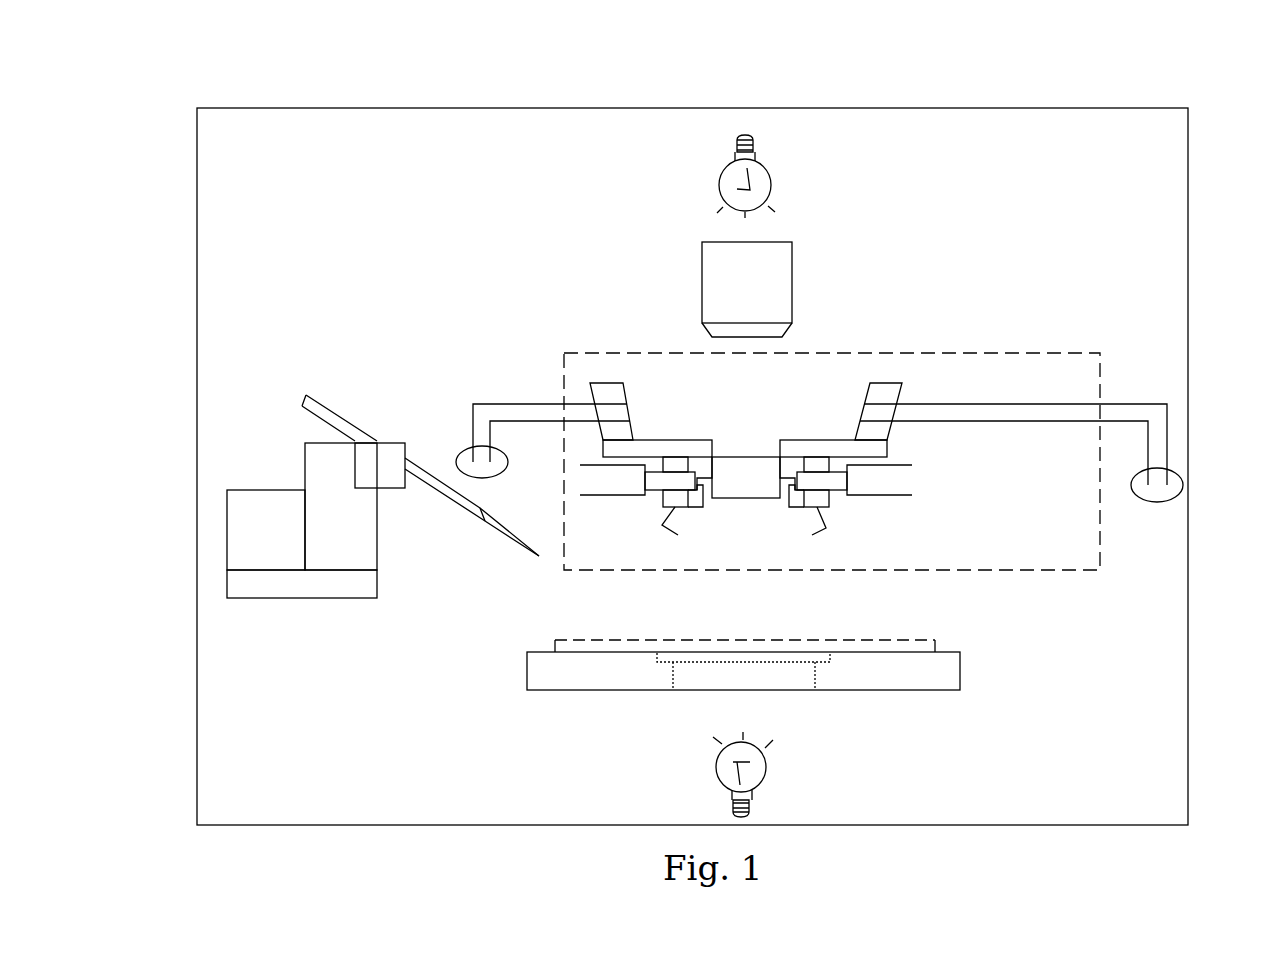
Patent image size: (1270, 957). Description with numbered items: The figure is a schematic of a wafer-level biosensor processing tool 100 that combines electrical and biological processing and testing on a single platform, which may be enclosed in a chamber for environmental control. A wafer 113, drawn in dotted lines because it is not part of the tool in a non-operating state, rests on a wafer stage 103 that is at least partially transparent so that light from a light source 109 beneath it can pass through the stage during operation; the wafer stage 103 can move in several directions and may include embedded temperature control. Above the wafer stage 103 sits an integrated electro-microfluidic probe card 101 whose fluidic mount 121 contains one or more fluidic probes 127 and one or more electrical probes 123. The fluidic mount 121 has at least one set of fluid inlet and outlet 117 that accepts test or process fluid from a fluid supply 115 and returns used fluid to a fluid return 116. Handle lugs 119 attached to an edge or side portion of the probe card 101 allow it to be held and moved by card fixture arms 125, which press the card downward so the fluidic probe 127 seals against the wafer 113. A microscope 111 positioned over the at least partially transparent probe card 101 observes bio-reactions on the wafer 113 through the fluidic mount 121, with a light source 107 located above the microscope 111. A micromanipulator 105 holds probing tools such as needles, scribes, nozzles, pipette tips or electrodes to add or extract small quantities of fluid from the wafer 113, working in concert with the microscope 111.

The wafer-level biosensor processing tool 100 is at (300, 103).
The integrated electro-microfluidic probe card 101 is at (1100, 467).
The wafer stage 103 is at (762, 675).
The micromanipulator 105 is at (337, 408).
The light source 107 is at (772, 175).
The light source 109 is at (767, 770).
The microscope 111 is at (792, 280).
The wafer 113 is at (935, 640).
The fluid supply 115 is at (913, 486).
The fluid return 116 is at (583, 487).
The fluid inlet and outlet 117 is at (677, 482).
The handle lug 119 is at (898, 390).
The fluidic mount 121 is at (665, 500).
The electrical probe 123 is at (823, 530).
The card fixture arm 125 is at (1167, 407).
The fluidic probe 127 is at (740, 500).